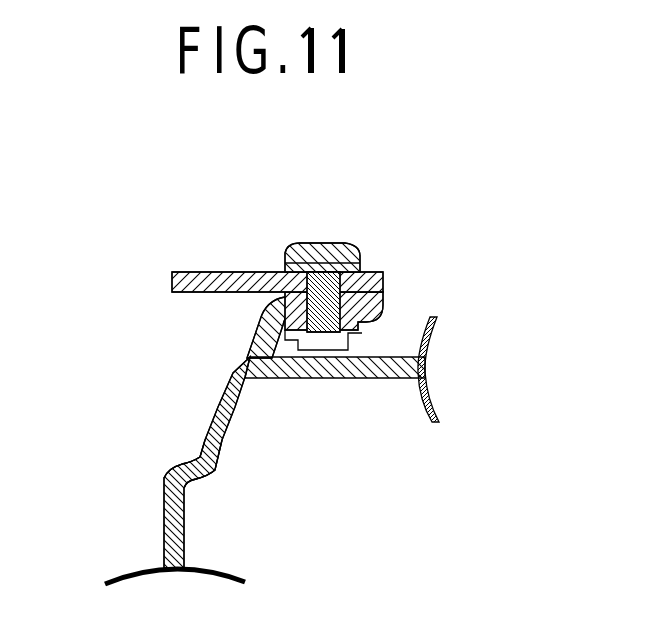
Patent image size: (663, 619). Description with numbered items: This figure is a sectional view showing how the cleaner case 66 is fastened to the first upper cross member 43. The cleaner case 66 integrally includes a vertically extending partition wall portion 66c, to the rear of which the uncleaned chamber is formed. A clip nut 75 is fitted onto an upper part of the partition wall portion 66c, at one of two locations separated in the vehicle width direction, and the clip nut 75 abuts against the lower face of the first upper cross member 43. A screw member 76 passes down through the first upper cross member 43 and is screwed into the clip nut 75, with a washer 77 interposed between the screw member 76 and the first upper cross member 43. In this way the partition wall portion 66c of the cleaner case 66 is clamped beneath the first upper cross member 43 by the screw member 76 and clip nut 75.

The first upper cross member 43 is at (198, 272).
The screw member 76 is at (307, 246).
The washer 77 is at (365, 268).
The clip nut 75 is at (388, 308).
The cleaner case 66 is at (163, 498).
The partition wall portion 66c is at (217, 472).